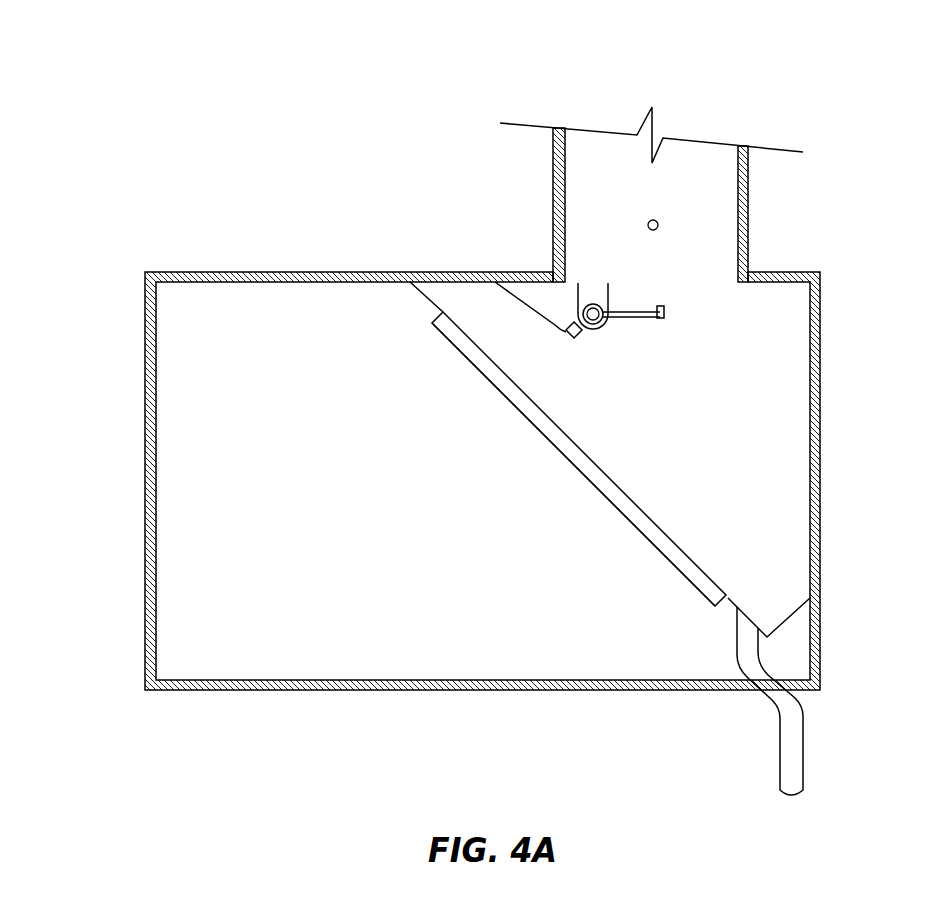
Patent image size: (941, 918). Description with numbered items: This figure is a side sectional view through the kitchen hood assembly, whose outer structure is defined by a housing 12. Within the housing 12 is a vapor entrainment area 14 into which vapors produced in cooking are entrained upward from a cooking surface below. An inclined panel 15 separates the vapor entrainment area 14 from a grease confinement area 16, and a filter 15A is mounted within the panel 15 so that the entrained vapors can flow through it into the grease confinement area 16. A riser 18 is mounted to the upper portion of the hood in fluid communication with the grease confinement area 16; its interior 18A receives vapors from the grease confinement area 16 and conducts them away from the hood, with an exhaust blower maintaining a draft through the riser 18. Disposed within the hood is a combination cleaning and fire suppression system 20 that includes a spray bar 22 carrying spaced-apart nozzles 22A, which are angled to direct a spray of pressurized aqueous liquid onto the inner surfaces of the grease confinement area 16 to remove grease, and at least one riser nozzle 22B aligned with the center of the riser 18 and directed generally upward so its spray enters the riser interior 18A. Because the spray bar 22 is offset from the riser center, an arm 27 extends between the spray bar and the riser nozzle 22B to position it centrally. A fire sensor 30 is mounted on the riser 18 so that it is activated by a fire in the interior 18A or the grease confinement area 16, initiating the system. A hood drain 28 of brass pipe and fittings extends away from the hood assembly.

The housing 12 is at (145, 408).
The vapor entrainment area 14 is at (275, 628).
The inclined panel 15 is at (427, 308).
The filter 15A is at (515, 410).
The grease confinement area 16 is at (758, 506).
The riser 18 is at (552, 188).
The interior of riser 18A is at (677, 175).
The combination cleaning and fire suppression system 20 is at (632, 338).
The spray bar 22 is at (605, 347).
The nozzles 22A is at (566, 332).
The riser nozzle 22B is at (665, 306).
The arm 27 is at (640, 318).
The hood drain 28 is at (793, 753).
The fire sensor 30 is at (660, 223).